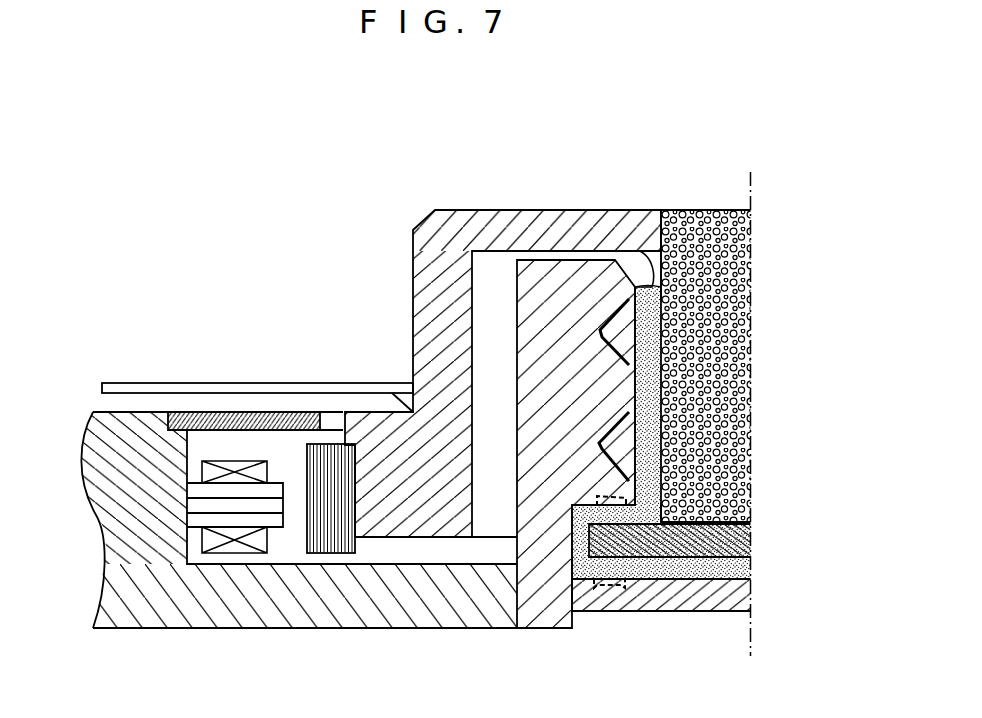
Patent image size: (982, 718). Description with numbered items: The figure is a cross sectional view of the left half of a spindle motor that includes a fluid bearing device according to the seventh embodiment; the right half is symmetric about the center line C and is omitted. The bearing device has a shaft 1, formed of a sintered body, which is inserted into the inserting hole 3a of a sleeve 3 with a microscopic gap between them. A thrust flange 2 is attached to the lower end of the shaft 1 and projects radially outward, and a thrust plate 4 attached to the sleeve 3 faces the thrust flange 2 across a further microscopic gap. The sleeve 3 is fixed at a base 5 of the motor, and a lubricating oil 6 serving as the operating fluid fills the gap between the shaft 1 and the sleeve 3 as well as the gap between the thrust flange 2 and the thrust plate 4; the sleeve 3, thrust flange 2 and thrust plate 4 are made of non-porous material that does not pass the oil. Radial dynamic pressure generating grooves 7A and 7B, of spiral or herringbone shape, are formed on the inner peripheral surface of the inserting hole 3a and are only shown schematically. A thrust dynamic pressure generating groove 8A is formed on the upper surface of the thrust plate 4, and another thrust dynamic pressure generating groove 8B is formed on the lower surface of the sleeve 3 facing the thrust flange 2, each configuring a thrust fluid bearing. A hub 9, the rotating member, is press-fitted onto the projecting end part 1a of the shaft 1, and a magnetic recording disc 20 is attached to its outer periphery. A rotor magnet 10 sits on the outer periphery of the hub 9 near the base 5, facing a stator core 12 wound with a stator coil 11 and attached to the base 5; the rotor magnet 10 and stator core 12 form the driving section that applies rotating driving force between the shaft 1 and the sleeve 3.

The shaft 1 is at (722, 288).
The projecting end part 1a is at (696, 231).
The thrust flange 2 is at (718, 539).
The sleeve 3 is at (558, 372).
The inserting hole 3a is at (634, 285).
The thrust plate 4 is at (724, 592).
The base 5 is at (288, 590).
The lubricating oil 6 is at (653, 287).
The radial dynamic pressure generating groove 7A is at (611, 342).
The radial dynamic pressure generating groove 7B is at (613, 457).
The thrust dynamic pressure generating groove 8A is at (608, 593).
The thrust dynamic pressure generating groove 8B is at (597, 486).
The hub 9 is at (485, 228).
The rotor magnet 10 is at (328, 545).
The stator coil 11 is at (212, 548).
The stator core 12 is at (195, 522).
The magnetic recording disc 20 is at (223, 382).
The center line C is at (752, 181).